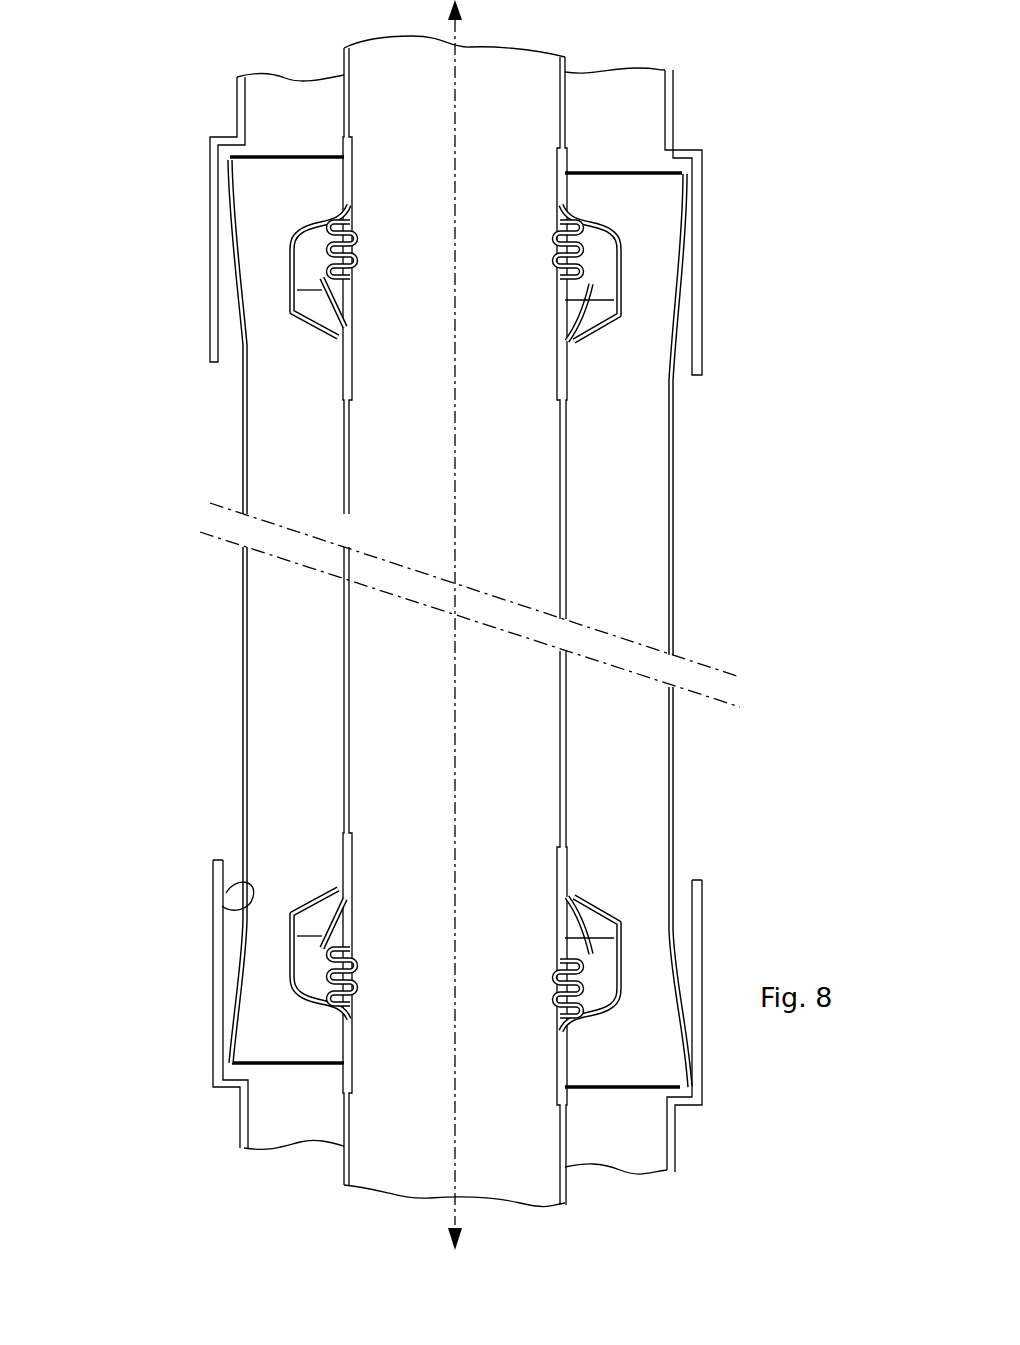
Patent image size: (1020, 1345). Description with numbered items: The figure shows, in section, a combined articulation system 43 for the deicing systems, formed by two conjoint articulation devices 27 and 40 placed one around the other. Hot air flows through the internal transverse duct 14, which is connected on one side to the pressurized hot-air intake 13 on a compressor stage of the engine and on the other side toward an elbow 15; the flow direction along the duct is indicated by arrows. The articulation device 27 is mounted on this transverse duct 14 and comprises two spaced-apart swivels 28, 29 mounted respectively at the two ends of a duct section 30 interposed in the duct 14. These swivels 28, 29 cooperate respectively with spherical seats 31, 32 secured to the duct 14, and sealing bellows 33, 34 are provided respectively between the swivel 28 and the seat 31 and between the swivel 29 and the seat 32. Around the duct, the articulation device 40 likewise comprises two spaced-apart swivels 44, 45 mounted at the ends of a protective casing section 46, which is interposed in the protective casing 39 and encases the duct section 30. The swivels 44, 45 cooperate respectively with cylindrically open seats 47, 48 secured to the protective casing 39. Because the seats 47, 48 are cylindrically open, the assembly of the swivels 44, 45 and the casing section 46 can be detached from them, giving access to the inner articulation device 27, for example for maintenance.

The pressurized hot-air intake 13 is at (471, 612).
The internal transverse duct 14 is at (505, 85).
The elbow 15 is at (476, 1235).
The articulation device 27 is at (598, 540).
The swivel 28 is at (566, 297).
The swivel 29 is at (572, 928).
The duct section 30 is at (567, 472).
The spherical seat 31 is at (318, 300).
The spherical seat 32 is at (318, 918).
The sealing bellows 33 is at (352, 240).
The sealing bellows 34 is at (357, 982).
The protective casing 39 is at (673, 100).
The articulation device 40 is at (222, 394).
The combined articulation system 43 is at (198, 636).
The swivel 44 is at (232, 170).
The swivel 45 is at (234, 982).
The protective casing section 46 is at (243, 743).
The cylindrically open seat 47 is at (690, 348).
The cylindrically open seat 48 is at (226, 893).